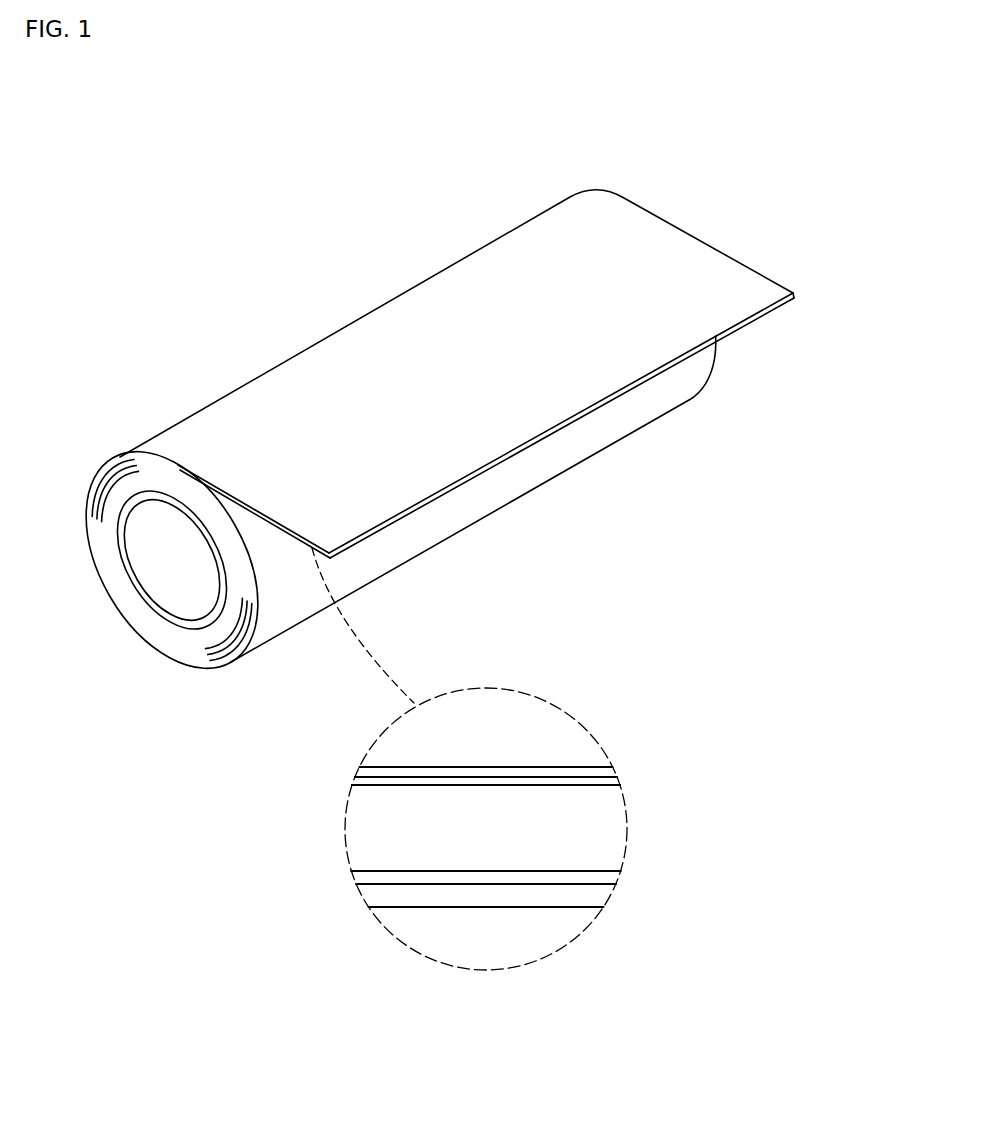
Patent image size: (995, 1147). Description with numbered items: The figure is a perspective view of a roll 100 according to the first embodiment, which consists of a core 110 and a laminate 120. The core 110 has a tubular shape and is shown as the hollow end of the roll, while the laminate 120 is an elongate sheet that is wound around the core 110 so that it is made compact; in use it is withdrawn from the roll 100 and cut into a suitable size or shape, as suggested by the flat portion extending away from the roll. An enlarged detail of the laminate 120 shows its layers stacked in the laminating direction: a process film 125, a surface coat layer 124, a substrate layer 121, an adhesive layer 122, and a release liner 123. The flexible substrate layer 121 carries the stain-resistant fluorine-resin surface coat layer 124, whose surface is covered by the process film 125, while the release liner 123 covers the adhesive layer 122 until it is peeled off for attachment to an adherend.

The roll 100 is at (155, 314).
The core 110 is at (158, 613).
The laminate 120 is at (677, 264).
The substrate layer 121 is at (609, 832).
The adhesive layer 122 is at (617, 879).
The release liner 123 is at (600, 895).
The surface coat layer 124 is at (612, 781).
The process film 125 is at (614, 772).